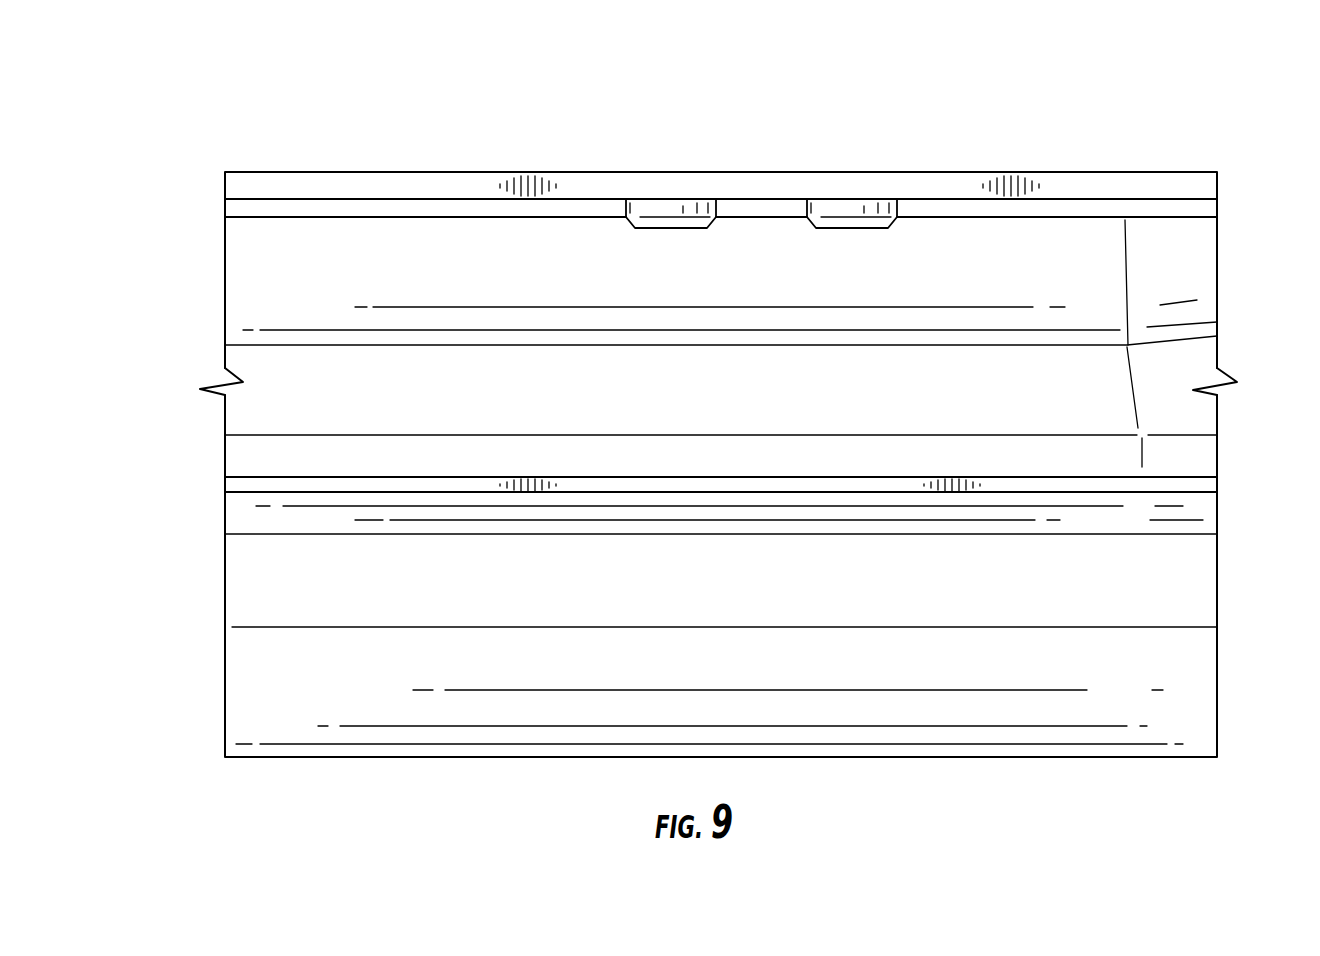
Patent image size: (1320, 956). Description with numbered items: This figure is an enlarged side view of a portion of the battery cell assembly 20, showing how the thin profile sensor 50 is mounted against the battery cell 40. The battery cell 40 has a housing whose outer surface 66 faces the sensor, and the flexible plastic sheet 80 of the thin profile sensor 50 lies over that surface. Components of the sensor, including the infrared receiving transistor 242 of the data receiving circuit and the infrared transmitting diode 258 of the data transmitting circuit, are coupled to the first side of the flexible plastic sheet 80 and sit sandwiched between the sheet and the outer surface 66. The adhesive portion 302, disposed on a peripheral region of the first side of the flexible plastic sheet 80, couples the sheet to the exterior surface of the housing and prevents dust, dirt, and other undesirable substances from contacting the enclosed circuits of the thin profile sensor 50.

The battery cell assembly 20 is at (958, 136).
The battery cell 40 is at (1228, 280).
The thin profile sensor 50 is at (1228, 182).
The outer surface 66 is at (1188, 217).
The flexible plastic sheet 80 is at (1077, 193).
The infrared receiving transistor 242 is at (653, 217).
The infrared transmitting diode 258 is at (833, 217).
The adhesive portion 302 is at (225, 208).